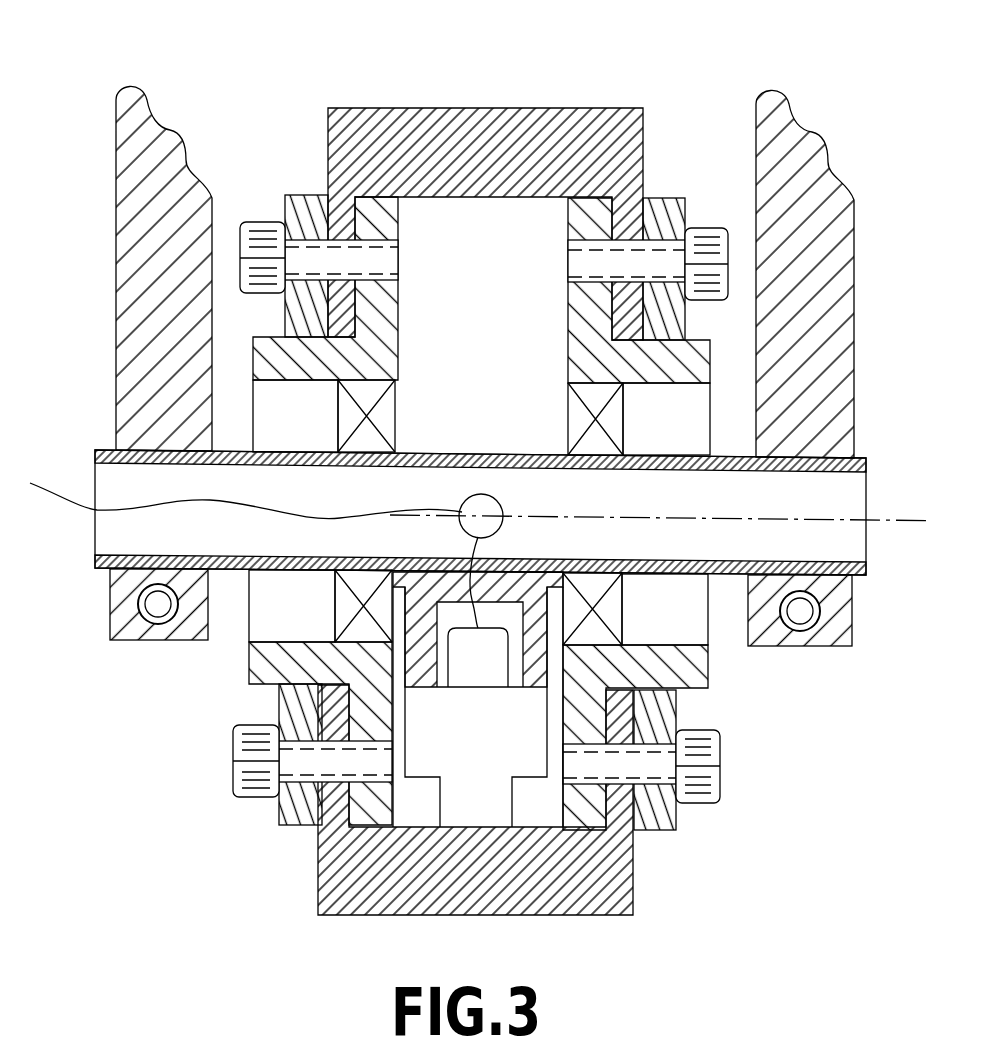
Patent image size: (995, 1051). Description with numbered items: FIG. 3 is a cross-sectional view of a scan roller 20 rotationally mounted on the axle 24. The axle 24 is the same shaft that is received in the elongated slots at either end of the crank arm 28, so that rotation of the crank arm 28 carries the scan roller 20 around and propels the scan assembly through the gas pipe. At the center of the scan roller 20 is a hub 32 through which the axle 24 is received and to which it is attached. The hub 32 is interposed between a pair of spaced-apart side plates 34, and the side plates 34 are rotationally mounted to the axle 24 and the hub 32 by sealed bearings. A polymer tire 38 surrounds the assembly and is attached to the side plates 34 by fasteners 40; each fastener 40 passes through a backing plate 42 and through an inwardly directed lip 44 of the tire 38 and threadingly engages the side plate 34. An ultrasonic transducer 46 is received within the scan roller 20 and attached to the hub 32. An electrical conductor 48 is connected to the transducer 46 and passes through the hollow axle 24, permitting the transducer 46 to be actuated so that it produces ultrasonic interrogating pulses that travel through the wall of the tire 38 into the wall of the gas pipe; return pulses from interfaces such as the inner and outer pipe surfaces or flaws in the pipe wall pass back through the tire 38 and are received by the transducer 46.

The scan roller 20 is at (470, 76).
The axle 24 is at (808, 472).
The crank arm 28 is at (823, 285).
The hub 32 is at (553, 677).
The side plates 34 is at (277, 662).
The polymer tire 38 is at (382, 128).
The fasteners 40 is at (712, 227).
The backing plate 42 is at (658, 217).
The flange 44 is at (611, 213).
The ultrasonic transducer 46 is at (478, 763).
The electrical conductor 48 is at (97, 509).